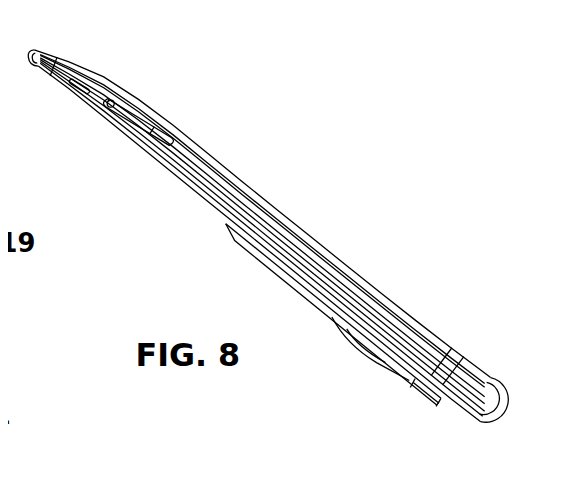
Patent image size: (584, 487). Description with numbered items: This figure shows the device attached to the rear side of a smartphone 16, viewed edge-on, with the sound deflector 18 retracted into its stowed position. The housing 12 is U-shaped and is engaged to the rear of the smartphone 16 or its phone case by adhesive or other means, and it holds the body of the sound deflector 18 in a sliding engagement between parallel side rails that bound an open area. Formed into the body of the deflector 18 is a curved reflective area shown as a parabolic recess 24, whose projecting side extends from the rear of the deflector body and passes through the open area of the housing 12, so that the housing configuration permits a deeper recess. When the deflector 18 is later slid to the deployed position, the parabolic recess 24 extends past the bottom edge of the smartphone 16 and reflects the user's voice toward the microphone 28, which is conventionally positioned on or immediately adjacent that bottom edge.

The smartphone 16 is at (215, 189).
The housing 12 is at (260, 257).
The parabolic recess 24 is at (362, 340).
The sound deflector 18 is at (440, 393).
The microphone 28 is at (497, 398).